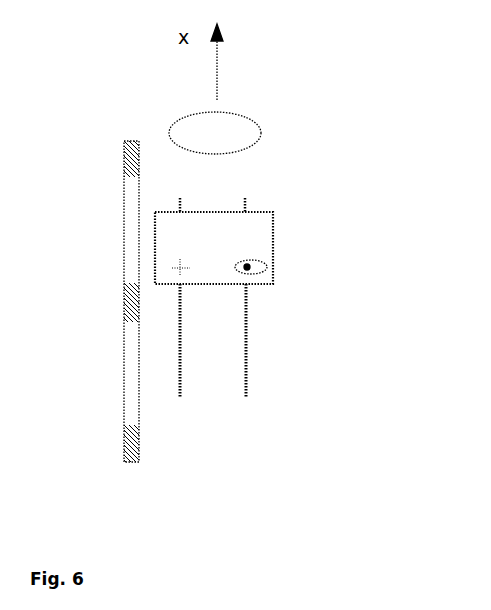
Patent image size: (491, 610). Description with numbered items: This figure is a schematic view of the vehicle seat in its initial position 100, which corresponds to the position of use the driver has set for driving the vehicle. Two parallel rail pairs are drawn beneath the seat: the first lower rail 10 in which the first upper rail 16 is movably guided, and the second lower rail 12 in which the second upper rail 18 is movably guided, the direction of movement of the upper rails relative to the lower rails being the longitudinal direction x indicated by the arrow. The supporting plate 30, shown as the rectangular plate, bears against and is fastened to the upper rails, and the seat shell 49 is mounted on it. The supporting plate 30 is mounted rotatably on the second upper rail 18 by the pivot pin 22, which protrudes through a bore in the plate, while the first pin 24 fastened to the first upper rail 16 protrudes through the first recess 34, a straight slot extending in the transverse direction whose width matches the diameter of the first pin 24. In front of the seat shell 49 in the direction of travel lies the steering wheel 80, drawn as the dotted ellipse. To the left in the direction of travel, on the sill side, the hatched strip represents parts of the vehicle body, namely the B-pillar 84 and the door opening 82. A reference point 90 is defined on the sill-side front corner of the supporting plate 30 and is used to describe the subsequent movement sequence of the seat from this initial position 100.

The initial position 100 is at (271, 482).
The door opening 82 is at (137, 258).
The B-pillar 84 is at (125, 318).
The steering wheel 80 is at (240, 132).
The reference point 90 is at (153, 211).
The supporting plate 30 is at (260, 233).
The seat shell 49 is at (214, 248).
The pivot pin 22 is at (181, 273).
The first pin 24 is at (250, 265).
The first recess 34 is at (264, 272).
The first lower rail 10 is at (250, 323).
The first upper rail 16 is at (312, 353).
The second lower rail 12 is at (178, 377).
The second upper rail 18 is at (213, 340).